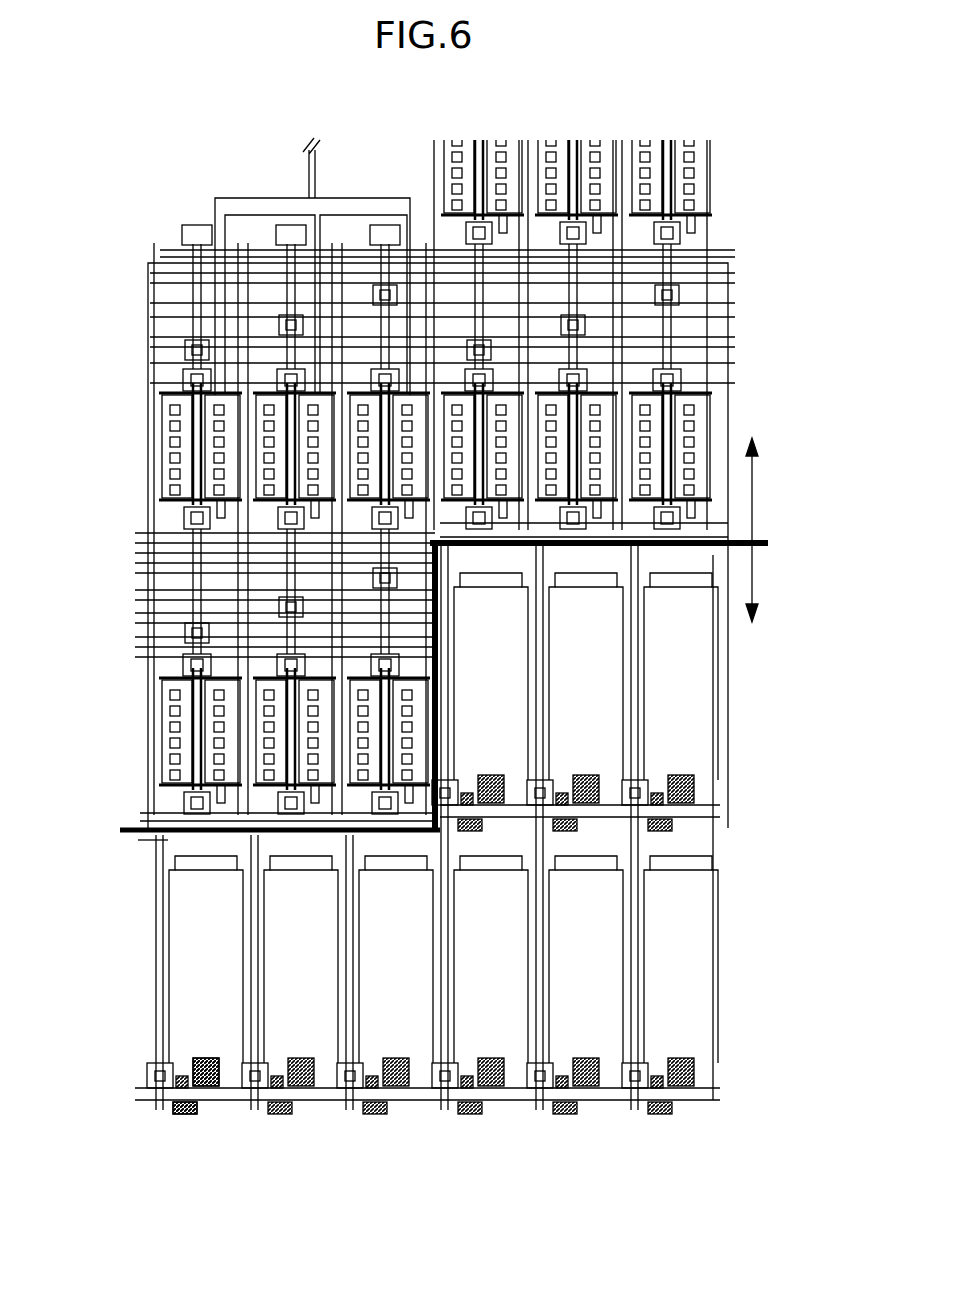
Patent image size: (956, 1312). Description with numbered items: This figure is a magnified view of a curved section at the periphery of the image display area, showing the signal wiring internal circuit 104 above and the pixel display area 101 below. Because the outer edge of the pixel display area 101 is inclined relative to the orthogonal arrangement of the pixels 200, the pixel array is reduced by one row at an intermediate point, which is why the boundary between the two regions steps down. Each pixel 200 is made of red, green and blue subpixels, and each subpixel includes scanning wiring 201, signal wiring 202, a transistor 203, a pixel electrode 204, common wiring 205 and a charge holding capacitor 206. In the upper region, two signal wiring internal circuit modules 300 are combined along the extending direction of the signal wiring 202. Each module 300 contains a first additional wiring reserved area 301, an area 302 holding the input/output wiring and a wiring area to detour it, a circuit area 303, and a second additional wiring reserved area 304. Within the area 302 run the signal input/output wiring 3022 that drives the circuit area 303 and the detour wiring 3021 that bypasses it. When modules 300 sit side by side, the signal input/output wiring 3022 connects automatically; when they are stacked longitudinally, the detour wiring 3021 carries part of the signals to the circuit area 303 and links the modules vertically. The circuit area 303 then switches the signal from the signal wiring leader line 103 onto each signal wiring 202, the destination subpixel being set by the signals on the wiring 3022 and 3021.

The signal wiring leader line 103 is at (312, 140).
The detour wiring 3021 is at (196, 300).
The first additional wiring reserved area 301 is at (128, 262).
The area including input/output wiring to the circuit area and a wiring area to deto 302 is at (128, 292).
The circuit area 303 is at (128, 382).
The second additional wiring reserved area 304 is at (128, 531).
The signal input/output wiring 3022 is at (140, 625).
The signal wiring internal circuit module 300 is at (735, 296).
The signal wiring internal circuit 104 is at (614, 490).
The pixel display area 101 is at (464, 686).
The pixel 200 is at (735, 780).
The common wiring 205 is at (150, 840).
The charge holding capacitor 206 is at (185, 853).
The signal wiring 202 is at (155, 1001).
The scanning wiring 201 is at (148, 1095).
The transistor 203 is at (185, 1115).
The pixel electrode 204 is at (235, 1085).